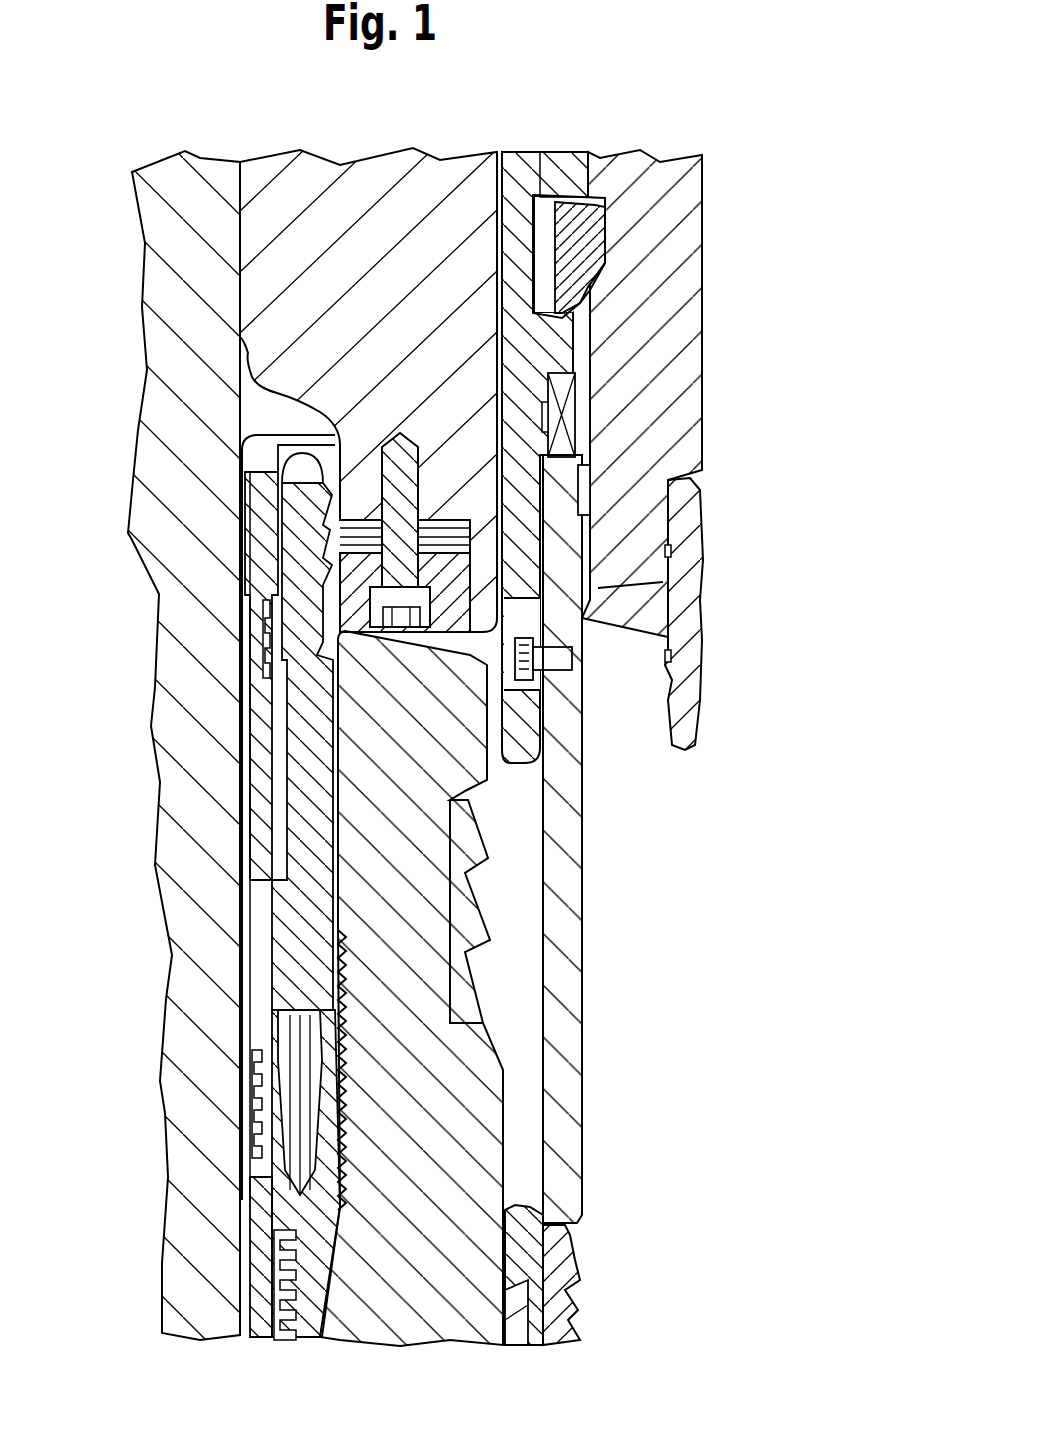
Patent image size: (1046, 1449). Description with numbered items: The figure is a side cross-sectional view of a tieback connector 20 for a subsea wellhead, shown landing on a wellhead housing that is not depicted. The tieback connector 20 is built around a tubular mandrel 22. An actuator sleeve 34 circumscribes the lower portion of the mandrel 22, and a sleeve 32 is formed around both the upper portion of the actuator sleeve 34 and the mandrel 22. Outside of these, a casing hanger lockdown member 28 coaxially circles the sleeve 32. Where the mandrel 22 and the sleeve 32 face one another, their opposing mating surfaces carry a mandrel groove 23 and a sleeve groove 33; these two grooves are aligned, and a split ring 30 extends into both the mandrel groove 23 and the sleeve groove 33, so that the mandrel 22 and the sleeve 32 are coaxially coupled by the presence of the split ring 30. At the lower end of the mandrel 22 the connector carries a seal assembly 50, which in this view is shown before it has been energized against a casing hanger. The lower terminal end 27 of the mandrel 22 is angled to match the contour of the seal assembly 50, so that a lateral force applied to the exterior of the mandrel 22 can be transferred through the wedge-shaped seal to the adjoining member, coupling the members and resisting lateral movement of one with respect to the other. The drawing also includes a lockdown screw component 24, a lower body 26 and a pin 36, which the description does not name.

The tieback connector 20 is at (640, 1031).
The tubular mandrel 22 is at (687, 276).
The mandrel groove 23 is at (600, 283).
The lockdown screw assembly 24 is at (313, 520).
The lower body 26 is at (431, 1223).
The lower terminal end 27 is at (632, 585).
The casing hanger lockdown member 28 is at (386, 295).
The split ring 30 is at (580, 227).
The sleeve 32 is at (521, 180).
The sleeve groove 33 is at (543, 200).
The actuator sleeve 34 is at (586, 1212).
The pin 36 is at (557, 660).
The seal assembly 50 is at (722, 617).